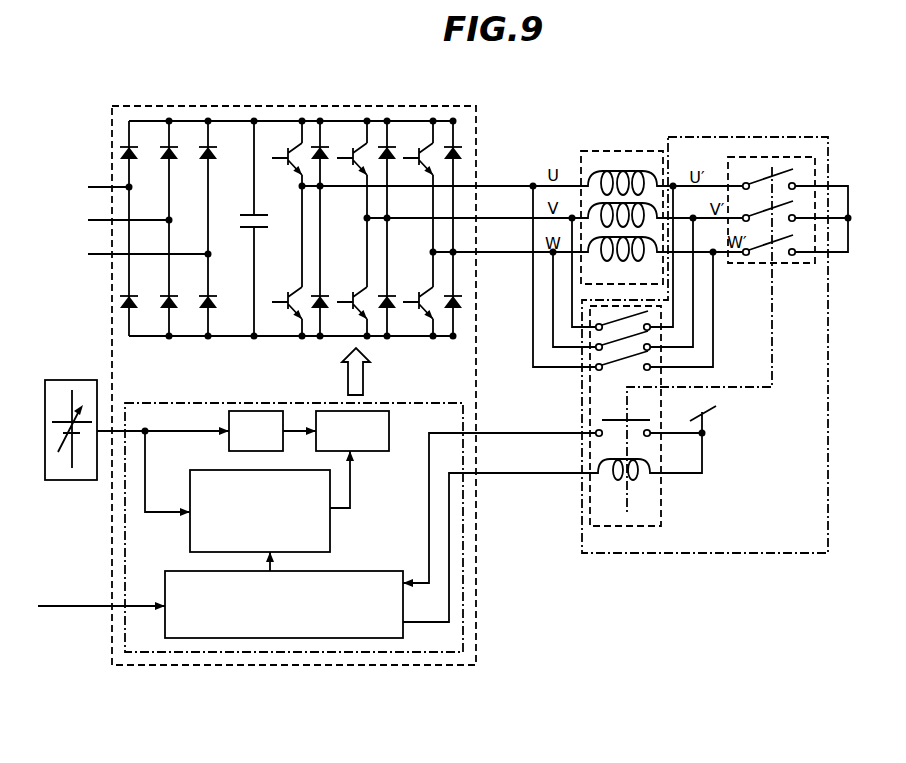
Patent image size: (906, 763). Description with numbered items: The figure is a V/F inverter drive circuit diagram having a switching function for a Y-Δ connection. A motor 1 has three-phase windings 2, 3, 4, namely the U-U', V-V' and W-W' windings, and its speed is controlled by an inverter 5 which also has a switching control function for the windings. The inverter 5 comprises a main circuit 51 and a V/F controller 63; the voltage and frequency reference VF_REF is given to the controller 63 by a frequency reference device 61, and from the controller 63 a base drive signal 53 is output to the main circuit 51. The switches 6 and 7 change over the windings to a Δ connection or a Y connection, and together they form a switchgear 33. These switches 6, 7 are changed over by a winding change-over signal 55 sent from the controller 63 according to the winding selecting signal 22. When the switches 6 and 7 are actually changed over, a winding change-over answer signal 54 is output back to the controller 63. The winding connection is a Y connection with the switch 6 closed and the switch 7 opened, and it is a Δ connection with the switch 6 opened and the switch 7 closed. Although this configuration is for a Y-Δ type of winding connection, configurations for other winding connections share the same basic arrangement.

The motor 1 is at (596, 150).
The U-U' winding 2 is at (614, 170).
The V-V' winding 3 is at (648, 203).
The W-W' winding 4 is at (584, 262).
The inverter 5 is at (345, 105).
The switch 6 is at (763, 157).
The switch 7 is at (665, 503).
The winding selecting signal 22 is at (101, 578).
The switchgear 33 is at (790, 553).
The main circuit 51 is at (229, 340).
The base drive signal 53 is at (348, 376).
The winding change-over answer signal 54 is at (560, 432).
The winding change-over signal 55 is at (569, 480).
The frequency reference device 61 is at (77, 380).
The V/F controller 63 is at (463, 635).